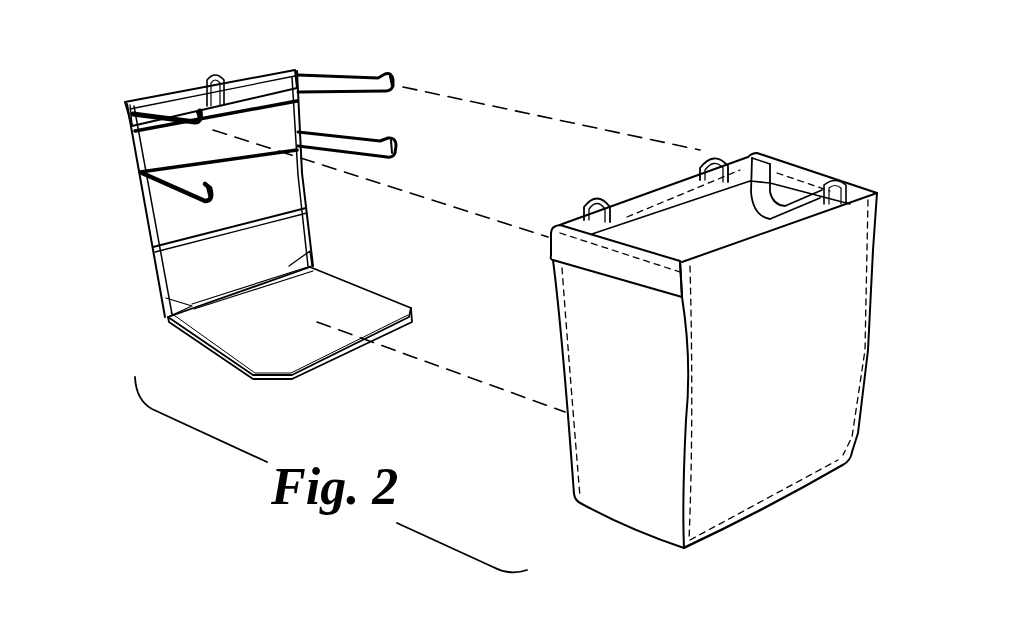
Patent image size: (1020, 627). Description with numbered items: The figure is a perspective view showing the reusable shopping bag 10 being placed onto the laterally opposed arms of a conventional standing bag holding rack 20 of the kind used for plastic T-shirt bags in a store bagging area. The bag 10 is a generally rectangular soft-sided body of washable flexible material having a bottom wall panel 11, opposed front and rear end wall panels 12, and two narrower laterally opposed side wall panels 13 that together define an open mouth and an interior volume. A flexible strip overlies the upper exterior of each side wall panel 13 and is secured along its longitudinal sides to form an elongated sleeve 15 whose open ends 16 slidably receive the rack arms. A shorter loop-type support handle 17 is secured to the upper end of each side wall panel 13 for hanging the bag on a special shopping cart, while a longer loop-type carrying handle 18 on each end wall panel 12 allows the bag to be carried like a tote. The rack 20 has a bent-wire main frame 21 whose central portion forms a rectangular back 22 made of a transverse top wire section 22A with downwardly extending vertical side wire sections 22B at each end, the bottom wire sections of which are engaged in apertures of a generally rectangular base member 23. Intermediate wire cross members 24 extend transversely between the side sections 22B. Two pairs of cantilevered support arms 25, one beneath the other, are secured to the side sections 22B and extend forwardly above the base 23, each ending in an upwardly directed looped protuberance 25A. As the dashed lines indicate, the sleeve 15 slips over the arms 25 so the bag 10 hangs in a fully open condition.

The reusable shopping bag 10 is at (718, 329).
The bottom wall panel 11 is at (750, 513).
The front and rear end wall panels 12 is at (782, 368).
The side wall panels 13 is at (632, 398).
The sleeve 15 is at (613, 268).
The open ends 16 is at (547, 250).
The support handle 17 is at (758, 158).
The carrying handle 18 is at (607, 207).
The standing bag holding rack 20 is at (249, 204).
The main frame 21 is at (136, 210).
The rectangular back 22 is at (303, 193).
The transverse top wire section 22A is at (169, 88).
The vertical side wire sections 22B is at (300, 116).
The base member 23 is at (288, 325).
The intermediate wire cross members 24 is at (252, 164).
The cantilevered support arms 25 is at (170, 115).
The looped protuberance 25A is at (396, 82).